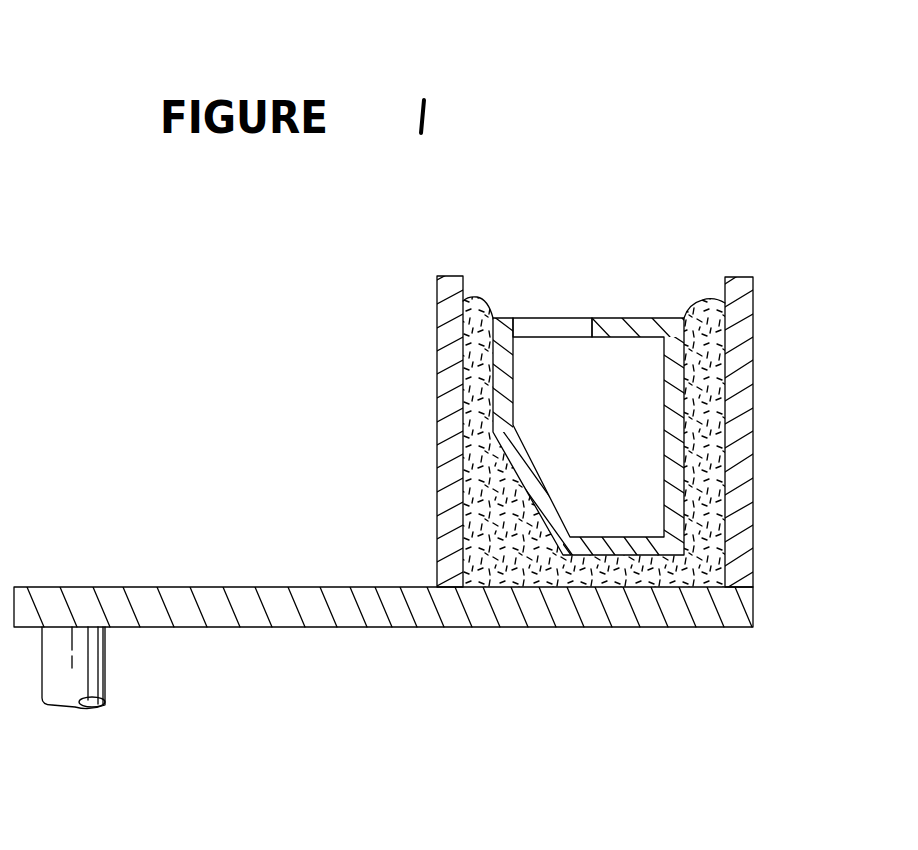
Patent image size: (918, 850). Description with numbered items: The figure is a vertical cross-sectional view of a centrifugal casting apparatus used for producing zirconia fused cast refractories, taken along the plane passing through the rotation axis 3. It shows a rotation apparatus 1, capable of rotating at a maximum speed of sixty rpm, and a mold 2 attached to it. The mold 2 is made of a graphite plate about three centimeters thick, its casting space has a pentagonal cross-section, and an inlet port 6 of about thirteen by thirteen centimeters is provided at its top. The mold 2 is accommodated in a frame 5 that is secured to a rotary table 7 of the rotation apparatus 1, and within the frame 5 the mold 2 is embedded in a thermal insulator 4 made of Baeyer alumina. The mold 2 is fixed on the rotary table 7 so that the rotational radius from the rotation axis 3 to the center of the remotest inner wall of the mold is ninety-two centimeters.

The rotation apparatus 1 is at (195, 654).
The mold 2 is at (628, 328).
The rotation axis 3 is at (92, 677).
The thermal insulator 4 is at (467, 450).
The frame 5 is at (738, 345).
The inlet port 6 is at (553, 328).
The rotary table 7 is at (592, 612).